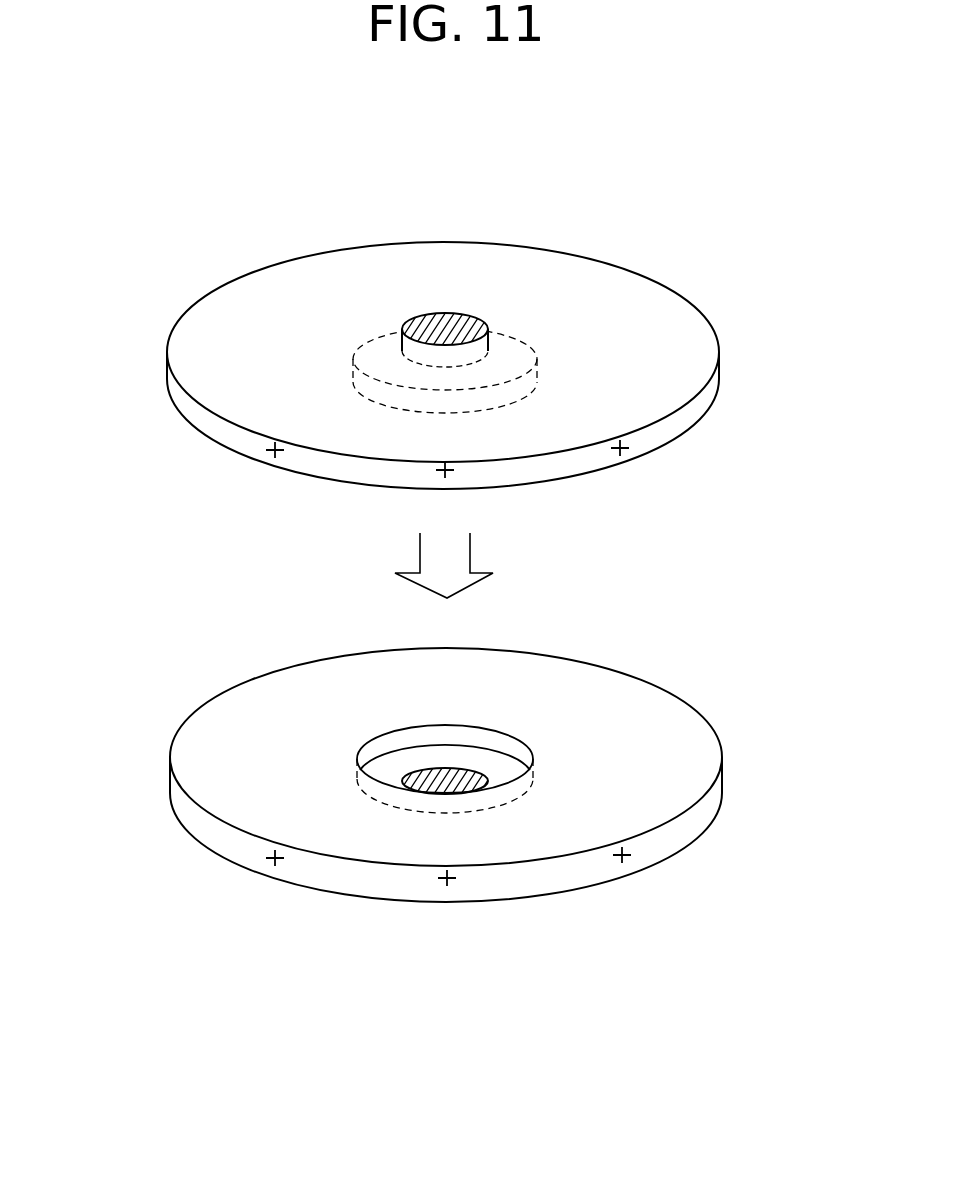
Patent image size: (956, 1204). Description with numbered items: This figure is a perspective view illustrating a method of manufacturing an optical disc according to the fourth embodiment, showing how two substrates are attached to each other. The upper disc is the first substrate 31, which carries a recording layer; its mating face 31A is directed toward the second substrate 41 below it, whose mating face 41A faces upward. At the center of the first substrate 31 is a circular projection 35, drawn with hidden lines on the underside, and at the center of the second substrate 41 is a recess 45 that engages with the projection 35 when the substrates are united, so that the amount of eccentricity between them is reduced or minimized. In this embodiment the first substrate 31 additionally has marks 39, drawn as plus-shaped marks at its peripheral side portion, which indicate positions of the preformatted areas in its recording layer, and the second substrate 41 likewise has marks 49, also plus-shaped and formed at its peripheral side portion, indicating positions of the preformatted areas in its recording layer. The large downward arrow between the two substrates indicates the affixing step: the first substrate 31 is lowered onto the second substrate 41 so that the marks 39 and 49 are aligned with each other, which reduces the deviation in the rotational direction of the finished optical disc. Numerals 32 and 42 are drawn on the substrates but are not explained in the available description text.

The first substrate 31 is at (459, 342).
The mating face 31A is at (698, 422).
The disc main surface 32 is at (720, 370).
The circular projection 35 is at (380, 348).
The marks 39 is at (268, 455).
The second substrate 41 is at (461, 829).
The mating face 41A is at (660, 722).
The disc main body 42 is at (724, 778).
The recess 45 is at (390, 767).
The marks 49 is at (268, 862).